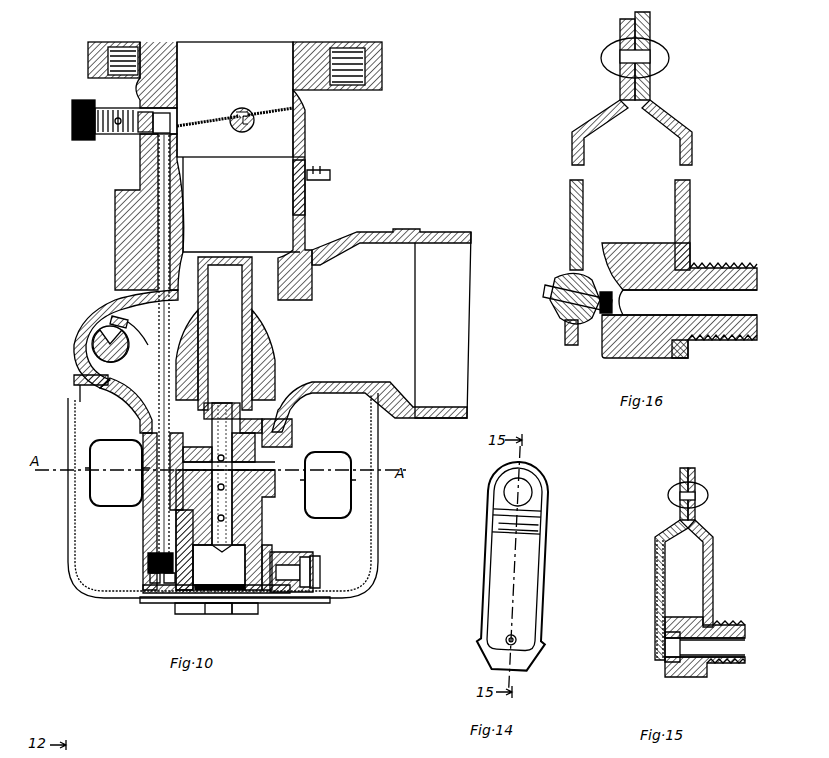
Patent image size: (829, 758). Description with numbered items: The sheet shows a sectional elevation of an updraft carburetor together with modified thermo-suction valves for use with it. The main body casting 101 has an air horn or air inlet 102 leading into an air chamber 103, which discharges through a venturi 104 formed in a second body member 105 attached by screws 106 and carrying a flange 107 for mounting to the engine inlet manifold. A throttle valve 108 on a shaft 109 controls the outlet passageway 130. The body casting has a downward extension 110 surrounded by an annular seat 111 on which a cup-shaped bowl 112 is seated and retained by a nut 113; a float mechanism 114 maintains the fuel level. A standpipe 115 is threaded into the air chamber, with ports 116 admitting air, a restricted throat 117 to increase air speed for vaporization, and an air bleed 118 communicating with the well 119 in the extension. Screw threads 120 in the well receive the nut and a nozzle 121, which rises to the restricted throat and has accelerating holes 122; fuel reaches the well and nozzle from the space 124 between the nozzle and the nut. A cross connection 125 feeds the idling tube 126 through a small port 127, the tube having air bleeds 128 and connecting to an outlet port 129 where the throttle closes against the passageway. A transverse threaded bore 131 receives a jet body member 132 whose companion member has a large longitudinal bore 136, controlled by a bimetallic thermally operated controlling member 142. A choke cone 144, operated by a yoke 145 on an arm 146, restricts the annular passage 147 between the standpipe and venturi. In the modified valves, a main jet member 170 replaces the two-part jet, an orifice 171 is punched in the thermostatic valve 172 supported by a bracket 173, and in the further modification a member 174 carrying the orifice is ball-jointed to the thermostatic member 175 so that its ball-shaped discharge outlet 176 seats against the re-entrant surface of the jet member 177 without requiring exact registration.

In FIG. 10, the main body casting 101 is at (402, 232).
In FIG. 10, the air inlet 102 is at (443, 325).
In FIG. 10, the air chamber 103 is at (369, 364).
In FIG. 10, the venturi 104 is at (241, 204).
In FIG. 10, the second body member 105 is at (306, 130).
In FIG. 10, the screws 106 is at (332, 174).
In FIG. 10, the flange 107 is at (380, 52).
In FIG. 10, the throttle valve 108 is at (270, 110).
In FIG. 10, the shaft 109 is at (240, 132).
In FIG. 10, the downward extension 110 is at (145, 420).
In FIG. 10, the annular seat 111 is at (378, 398).
In FIG. 10, the cup-shaped bowl 112 is at (362, 528).
In FIG. 10, the nut 113 is at (245, 613).
In FIG. 10, the float mechanism 114 is at (98, 500).
In FIG. 10, the standpipe 115 is at (272, 345).
In FIG. 10, the ports 116 is at (285, 428).
In FIG. 10, the restricted throat 117 is at (238, 392).
In FIG. 10, the air bleed 118 is at (272, 447).
In FIG. 10, the well 119 is at (245, 512).
In FIG. 10, the screw threads 120 is at (175, 610).
In FIG. 10, the nozzle 121 is at (245, 545).
In FIG. 10, the accelerating holes 122 is at (178, 540).
In FIG. 10, the space between nozzle and nut 124 is at (160, 598).
In FIG. 10, the cross connection 125 is at (160, 556).
In FIG. 10, the idling tube 126 is at (130, 398).
In FIG. 10, the small port 127 is at (148, 560).
In FIG. 10, the air bleeds 128 is at (162, 165).
In FIG. 10, the outlet port 129 is at (182, 133).
In FIG. 10, the outlet passageway 130 is at (210, 62).
In FIG. 10, the transverse threaded bore 131 is at (212, 614).
In FIG. 10, the body member 132 is at (280, 603).
In FIG. 10, the longitudinal bore 136 is at (310, 556).
In FIG. 10, the thermally operated controlling member 142 is at (318, 574).
In FIG. 10, the choke cone 144 is at (265, 335).
In FIG. 10, the yoke 145 is at (112, 322).
In FIG. 10, the arm 146 is at (95, 330).
In FIG. 10, the annular passage 147 is at (130, 270).
In FIG. 15, the main jet member 170 is at (735, 664).
In FIG. 16, the orifice 171 is at (548, 290).
In FIG. 15, the orifice 171 is at (664, 646).
In FIG. 15, the thermostatic valve 172 is at (657, 575).
In FIG. 16, the bracket 173 is at (690, 215).
In FIG. 15, the bracket 173 is at (713, 580).
In FIG. 16, the member 174 is at (556, 312).
In FIG. 16, the thermostatic member 175 is at (570, 215).
In FIG. 16, the ball-shaped discharge outlet 176 is at (679, 300).
In FIG. 16, the jet member 177 is at (598, 335).